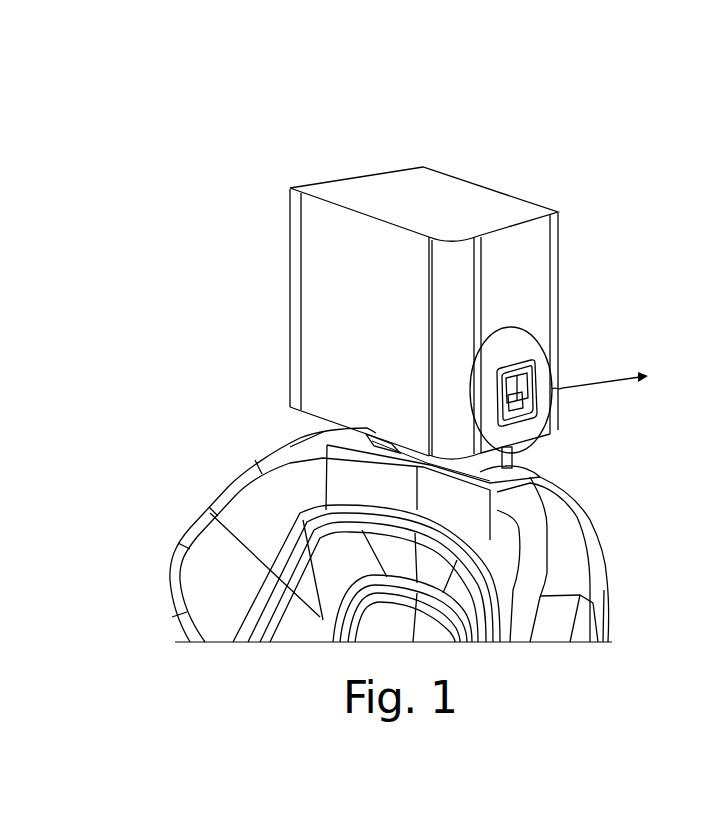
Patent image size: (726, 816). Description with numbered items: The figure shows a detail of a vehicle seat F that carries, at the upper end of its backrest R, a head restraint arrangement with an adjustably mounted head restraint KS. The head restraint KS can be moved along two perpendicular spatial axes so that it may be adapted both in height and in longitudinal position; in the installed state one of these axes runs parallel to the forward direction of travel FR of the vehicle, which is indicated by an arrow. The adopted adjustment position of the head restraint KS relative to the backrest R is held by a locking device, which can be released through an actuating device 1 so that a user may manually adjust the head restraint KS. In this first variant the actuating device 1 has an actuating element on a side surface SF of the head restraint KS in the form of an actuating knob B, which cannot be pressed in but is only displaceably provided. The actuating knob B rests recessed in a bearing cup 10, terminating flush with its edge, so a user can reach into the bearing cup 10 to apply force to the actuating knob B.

The head restraint KS is at (405, 155).
The side surface SF is at (513, 217).
The bearing cup 10 is at (517, 360).
The actuating knob B is at (533, 370).
The actuating device 1 is at (547, 422).
The vehicle seat F is at (172, 492).
The direction of travel FR is at (273, 332).
The backrest R is at (609, 622).